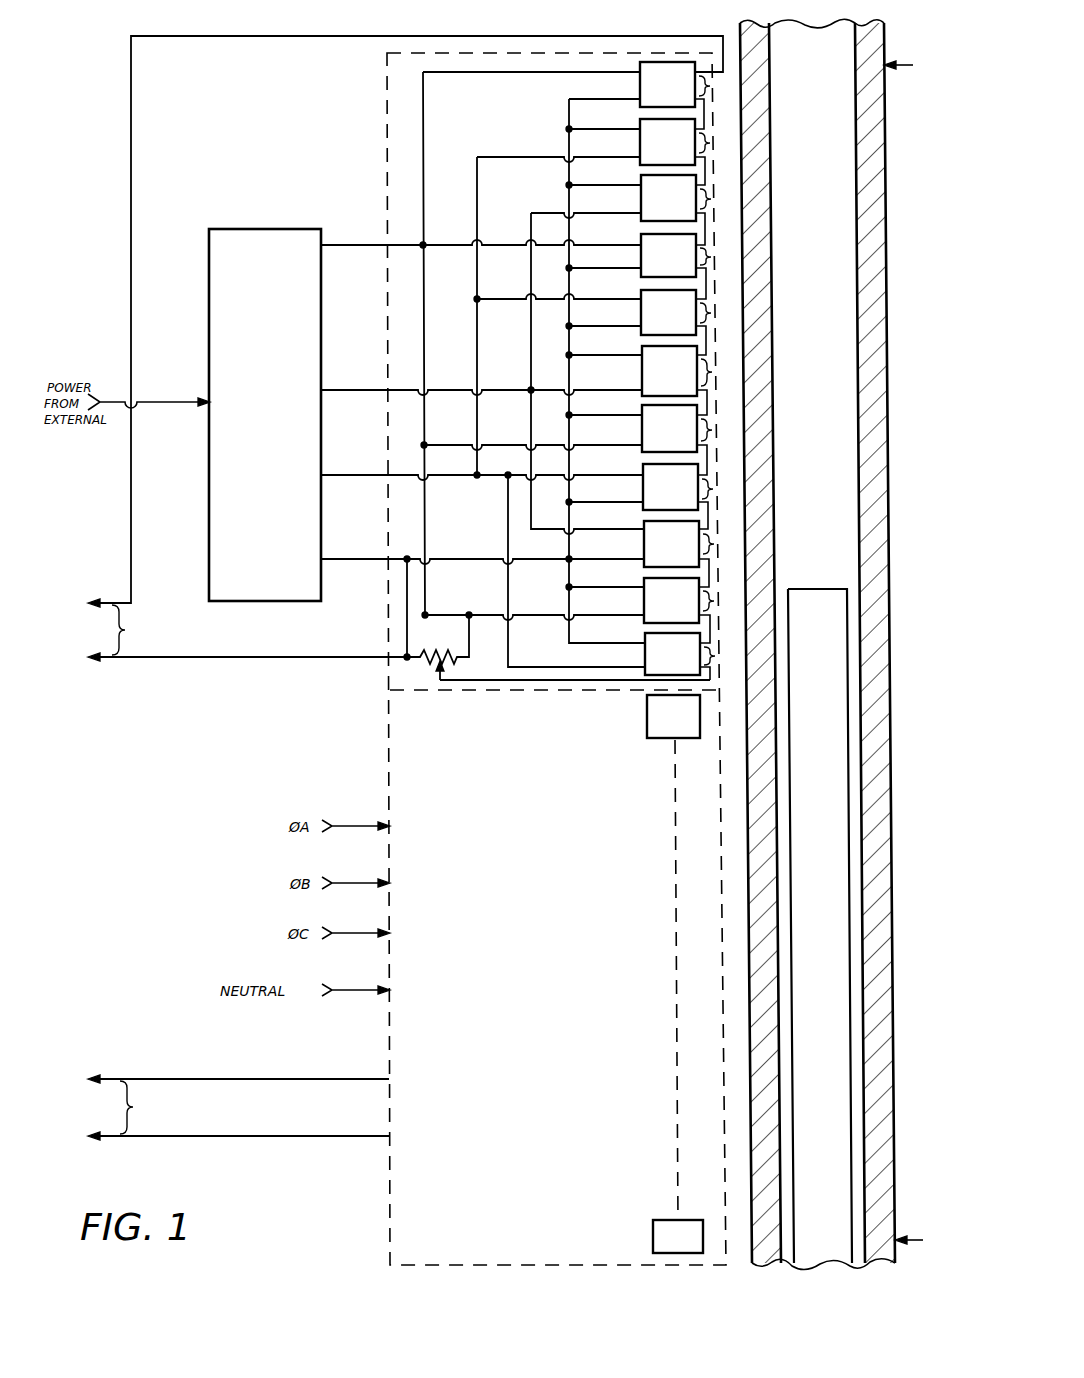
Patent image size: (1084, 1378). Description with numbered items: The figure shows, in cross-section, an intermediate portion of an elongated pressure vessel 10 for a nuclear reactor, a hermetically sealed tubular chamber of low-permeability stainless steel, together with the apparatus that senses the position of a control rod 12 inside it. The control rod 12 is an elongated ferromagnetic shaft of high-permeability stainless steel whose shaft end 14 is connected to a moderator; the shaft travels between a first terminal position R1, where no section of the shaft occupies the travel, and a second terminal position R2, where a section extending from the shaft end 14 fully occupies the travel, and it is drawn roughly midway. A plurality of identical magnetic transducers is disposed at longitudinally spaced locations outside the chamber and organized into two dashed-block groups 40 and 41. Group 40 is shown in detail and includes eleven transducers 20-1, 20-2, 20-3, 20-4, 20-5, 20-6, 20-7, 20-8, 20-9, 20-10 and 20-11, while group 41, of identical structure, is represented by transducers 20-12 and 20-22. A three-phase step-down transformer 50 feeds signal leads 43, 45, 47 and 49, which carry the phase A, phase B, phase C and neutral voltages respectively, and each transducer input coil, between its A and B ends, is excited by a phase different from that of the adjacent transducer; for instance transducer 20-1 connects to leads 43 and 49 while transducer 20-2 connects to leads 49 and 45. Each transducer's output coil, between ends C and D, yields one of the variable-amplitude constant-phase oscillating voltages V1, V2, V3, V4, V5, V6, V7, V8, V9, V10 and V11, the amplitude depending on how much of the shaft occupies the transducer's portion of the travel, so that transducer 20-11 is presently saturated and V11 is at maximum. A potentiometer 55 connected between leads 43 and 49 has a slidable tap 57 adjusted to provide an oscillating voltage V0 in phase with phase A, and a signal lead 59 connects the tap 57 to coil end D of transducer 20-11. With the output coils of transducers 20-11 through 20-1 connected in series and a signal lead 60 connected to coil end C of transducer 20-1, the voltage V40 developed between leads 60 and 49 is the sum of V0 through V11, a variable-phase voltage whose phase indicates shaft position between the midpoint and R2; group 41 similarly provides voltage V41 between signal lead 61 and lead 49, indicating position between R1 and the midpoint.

The pressure vessel 10 is at (736, 1262).
The control rod 12 is at (829, 849).
The shaft end 14 is at (822, 589).
The magnetic transducer 20-1 is at (640, 92).
The magnetic transducer 20-2 is at (640, 149).
The magnetic transducer 20-3 is at (641, 205).
The magnetic transducer 20-4 is at (641, 262).
The magnetic transducer 20-5 is at (641, 319).
The magnetic transducer 20-6 is at (642, 382).
The magnetic transducer 20-7 is at (642, 437).
The magnetic transducer 20-8 is at (643, 495).
The magnetic transducer 20-9 is at (644, 551).
The magnetic transducer 20-10 is at (644, 608).
The magnetic transducer 20-11 is at (645, 663).
The magnetic transducer 20-12 is at (647, 730).
The magnetic transducer 20-22 is at (653, 1244).
The transducer group 40 is at (395, 151).
The transducer group 41 is at (404, 755).
The signal lead 43 is at (424, 197).
The signal lead 45 is at (457, 389).
The signal lead 47 is at (448, 479).
The signal lead 49 is at (472, 559).
The transformer 50 is at (209, 250).
The potentiometer 55 is at (447, 653).
The slidable tap 57 is at (447, 666).
The signal lead 59 is at (510, 683).
The signal lead 60 is at (280, 38).
The signal lead 61 is at (320, 1079).
The first terminal position R1 is at (923, 1240).
The second terminal position R2 is at (913, 65).
The oscillating voltage V0 is at (405, 661).
The variable-amplitude constant-phase oscillating voltage V1 is at (718, 86).
The variable-amplitude constant-phase oscillating voltage V2 is at (718, 143).
The variable-amplitude constant-phase oscillating voltage V3 is at (719, 199).
The variable-amplitude constant-phase oscillating voltage V4 is at (719, 256).
The variable-amplitude constant-phase oscillating voltage V5 is at (720, 313).
The variable-amplitude constant-phase oscillating voltage V6 is at (721, 372).
The variable-amplitude constant-phase oscillating voltage V7 is at (722, 430).
The variable-amplitude constant-phase oscillating voltage V8 is at (722, 489).
The variable-amplitude constant-phase oscillating voltage V9 is at (723, 544).
The variable-amplitude constant-phase oscillating voltage V10 is at (728, 601).
The variable-amplitude constant-phase oscillating voltage V11 is at (729, 656).
The variable-phase oscillating voltage V40 is at (134, 630).
The variable-phase oscillating voltage V41 is at (143, 1107).